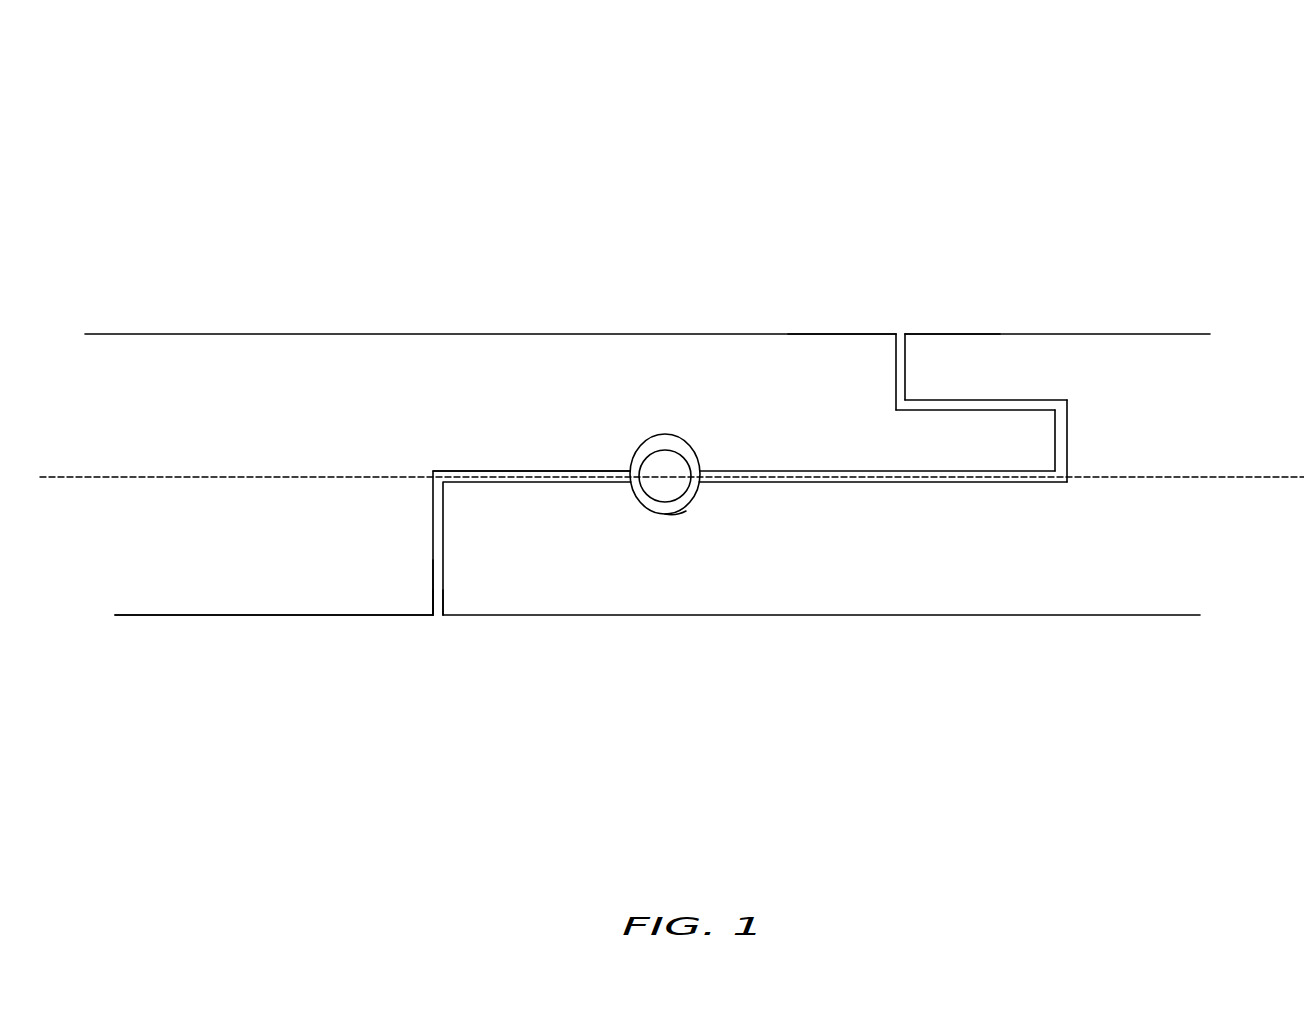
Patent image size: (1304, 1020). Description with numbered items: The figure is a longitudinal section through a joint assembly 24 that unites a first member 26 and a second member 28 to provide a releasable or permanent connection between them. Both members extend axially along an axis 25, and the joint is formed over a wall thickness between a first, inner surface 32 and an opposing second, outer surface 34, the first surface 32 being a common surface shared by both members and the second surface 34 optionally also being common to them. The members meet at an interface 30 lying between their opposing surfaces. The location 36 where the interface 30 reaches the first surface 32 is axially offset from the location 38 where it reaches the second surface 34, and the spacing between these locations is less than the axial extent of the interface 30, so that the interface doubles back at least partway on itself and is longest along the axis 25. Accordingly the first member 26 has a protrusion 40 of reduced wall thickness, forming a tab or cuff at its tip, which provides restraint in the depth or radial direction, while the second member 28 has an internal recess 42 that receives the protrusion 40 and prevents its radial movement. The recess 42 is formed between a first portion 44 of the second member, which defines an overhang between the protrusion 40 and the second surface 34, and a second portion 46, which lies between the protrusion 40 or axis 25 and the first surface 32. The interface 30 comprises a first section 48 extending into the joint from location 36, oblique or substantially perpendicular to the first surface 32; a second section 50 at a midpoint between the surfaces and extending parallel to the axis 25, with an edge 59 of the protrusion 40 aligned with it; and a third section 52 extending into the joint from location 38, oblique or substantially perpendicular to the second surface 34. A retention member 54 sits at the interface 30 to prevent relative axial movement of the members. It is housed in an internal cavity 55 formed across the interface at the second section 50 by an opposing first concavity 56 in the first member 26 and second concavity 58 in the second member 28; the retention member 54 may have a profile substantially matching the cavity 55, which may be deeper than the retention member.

The joint assembly 24 is at (253, 178).
The axis 25 is at (125, 477).
The first member 26 is at (142, 563).
The second member 28 is at (1107, 543).
The interface 30 is at (834, 484).
The first surface 32 is at (403, 616).
The second surface 34 is at (1000, 333).
The location of interface at first surface 36 is at (432, 614).
The location of interface at second surface 38 is at (898, 333).
The protrusion 40 is at (957, 457).
The recess 42 is at (1067, 441).
The first portion 44 is at (961, 387).
The second portion 46 is at (532, 561).
The first section 48 is at (432, 525).
The second section 50 is at (490, 470).
The third section 52 is at (896, 367).
The retention member 54 is at (668, 462).
The internal cavity 55 is at (671, 522).
The first concavity 56 is at (646, 441).
The second concavity 58 is at (686, 511).
The edge of protrusion 59 is at (960, 484).